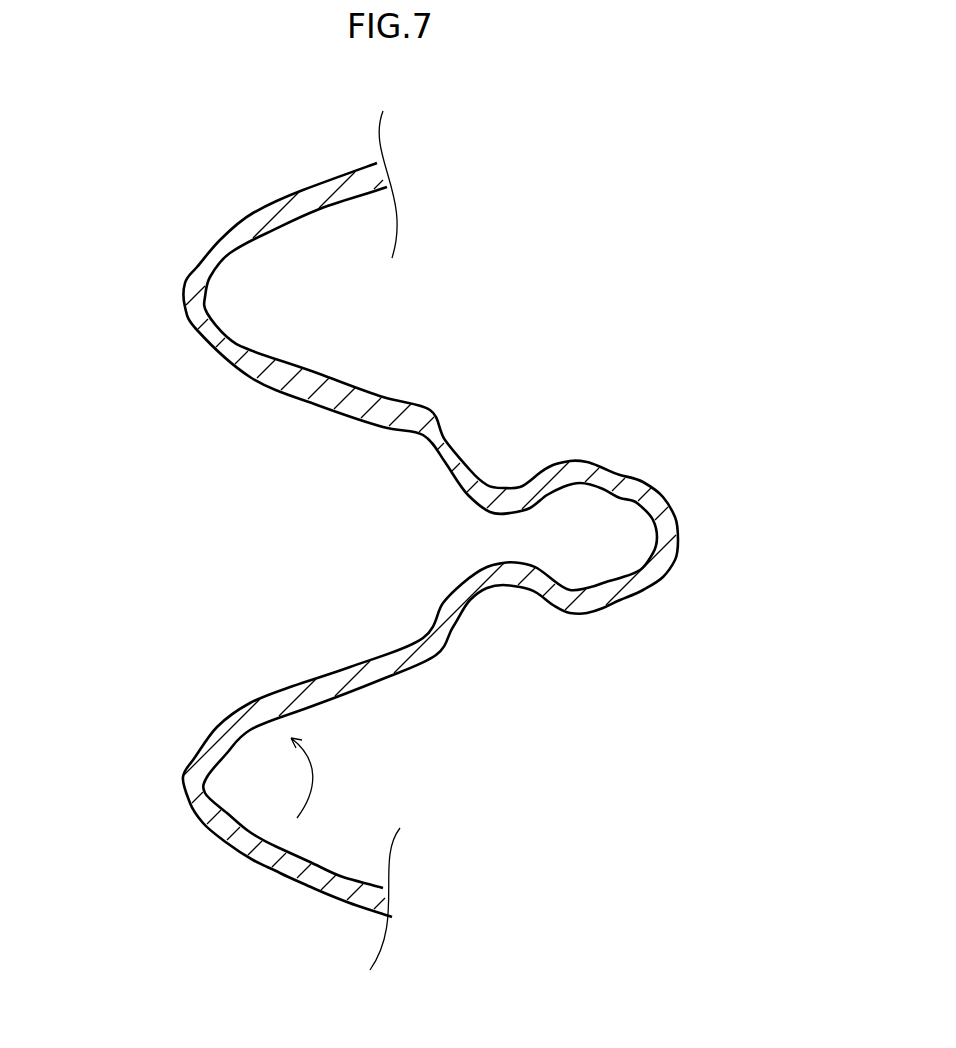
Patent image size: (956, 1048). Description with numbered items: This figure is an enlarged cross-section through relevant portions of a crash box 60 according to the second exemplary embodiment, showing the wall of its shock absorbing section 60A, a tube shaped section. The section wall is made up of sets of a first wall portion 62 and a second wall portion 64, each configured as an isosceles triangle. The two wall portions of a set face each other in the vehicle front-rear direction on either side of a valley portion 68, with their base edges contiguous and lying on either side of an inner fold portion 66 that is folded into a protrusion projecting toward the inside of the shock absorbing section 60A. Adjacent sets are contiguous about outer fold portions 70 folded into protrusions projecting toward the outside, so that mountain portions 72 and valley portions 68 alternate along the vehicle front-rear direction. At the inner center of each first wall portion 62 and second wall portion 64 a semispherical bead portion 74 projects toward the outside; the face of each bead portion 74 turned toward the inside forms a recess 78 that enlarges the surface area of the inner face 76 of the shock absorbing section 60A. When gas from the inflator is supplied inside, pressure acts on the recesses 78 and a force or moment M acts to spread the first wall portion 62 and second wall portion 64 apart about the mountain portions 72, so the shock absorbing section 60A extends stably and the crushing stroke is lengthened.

The shock absorbing section 60A is at (399, 535).
The crash box 60 is at (195, 157).
The first wall portion 62 is at (308, 401).
The second wall portion 64 is at (288, 689).
The inner fold portion 66 is at (677, 547).
The valley portion 68 is at (688, 499).
The outer fold portion 70 is at (183, 297).
The mountain portion 72 is at (180, 262).
The bead portion 74 is at (443, 464).
The inner face 76 is at (313, 210).
The recess 78 is at (502, 488).
The moment M is at (312, 770).